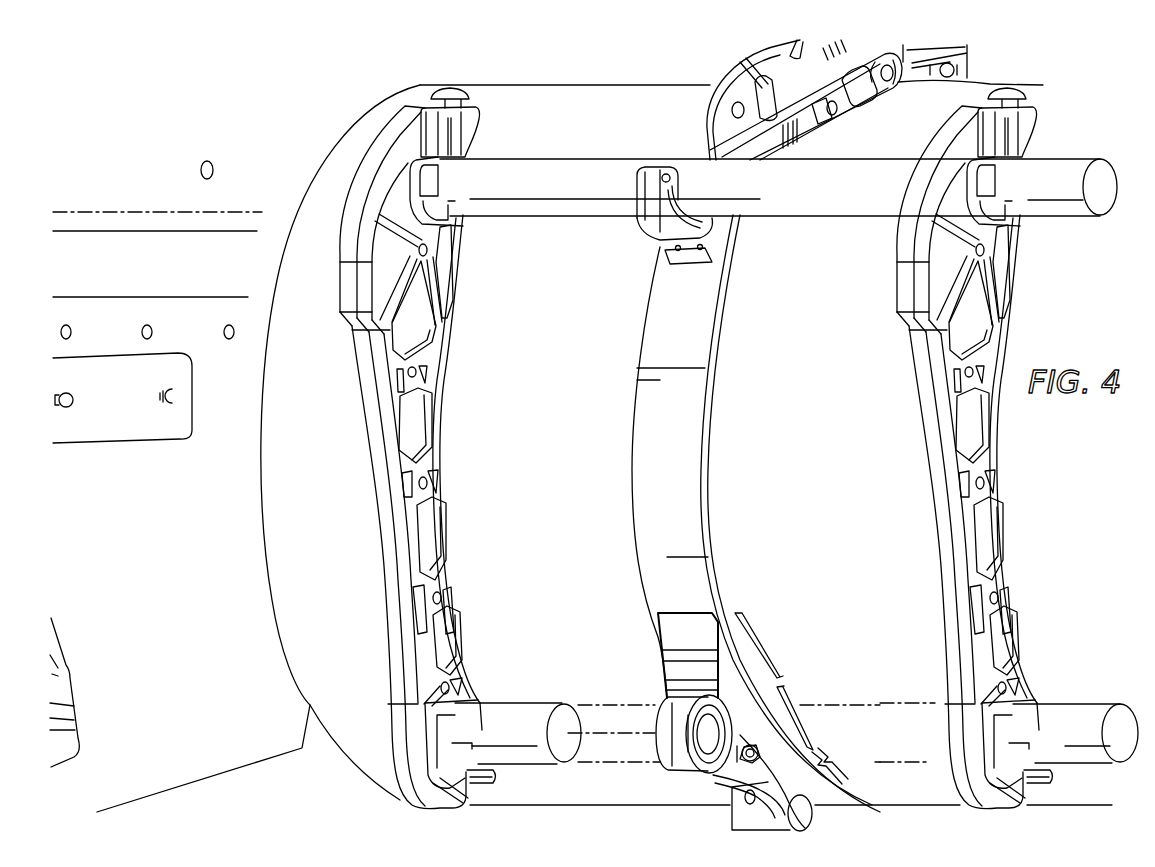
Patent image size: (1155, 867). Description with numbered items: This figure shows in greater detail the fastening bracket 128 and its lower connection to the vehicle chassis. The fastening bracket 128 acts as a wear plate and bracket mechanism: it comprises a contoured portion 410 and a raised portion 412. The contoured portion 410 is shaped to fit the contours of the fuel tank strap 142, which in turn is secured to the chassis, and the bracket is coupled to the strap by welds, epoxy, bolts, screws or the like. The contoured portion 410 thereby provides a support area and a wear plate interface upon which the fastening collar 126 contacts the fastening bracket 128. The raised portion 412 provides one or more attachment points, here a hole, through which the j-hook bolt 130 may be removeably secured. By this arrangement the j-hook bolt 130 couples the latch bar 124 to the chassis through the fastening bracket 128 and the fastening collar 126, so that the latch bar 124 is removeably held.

The latch bar 124 is at (522, 705).
The fastening collar 126 is at (663, 720).
The fastening bracket 128 is at (667, 629).
The j-hook bolt 130 is at (732, 781).
The fuel tank strap 142 is at (632, 447).
The contoured portion 410 is at (778, 679).
The raised portion 412 is at (824, 762).